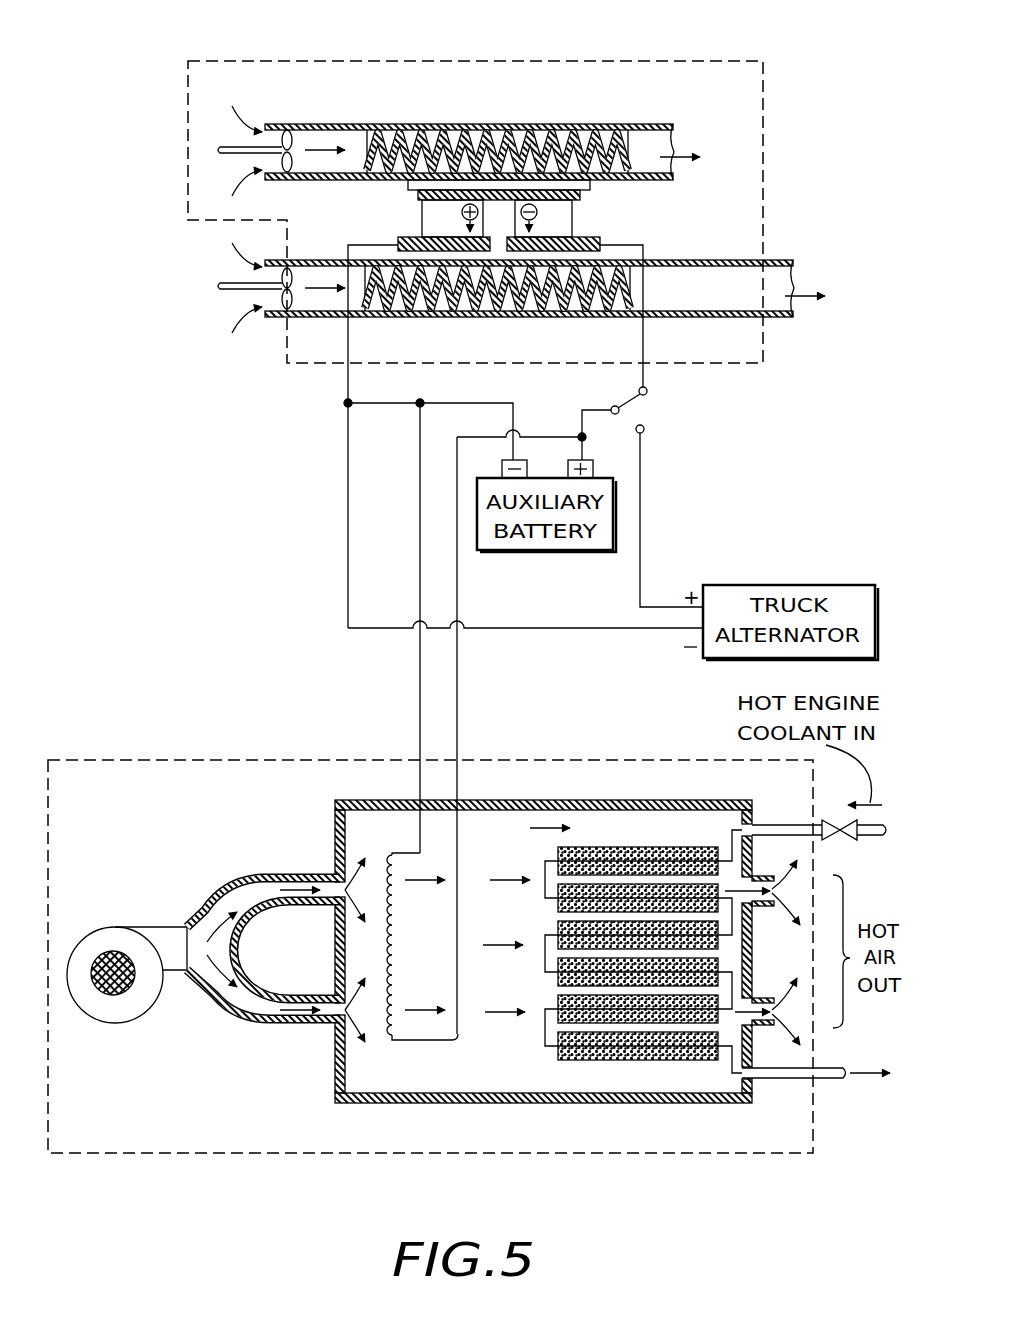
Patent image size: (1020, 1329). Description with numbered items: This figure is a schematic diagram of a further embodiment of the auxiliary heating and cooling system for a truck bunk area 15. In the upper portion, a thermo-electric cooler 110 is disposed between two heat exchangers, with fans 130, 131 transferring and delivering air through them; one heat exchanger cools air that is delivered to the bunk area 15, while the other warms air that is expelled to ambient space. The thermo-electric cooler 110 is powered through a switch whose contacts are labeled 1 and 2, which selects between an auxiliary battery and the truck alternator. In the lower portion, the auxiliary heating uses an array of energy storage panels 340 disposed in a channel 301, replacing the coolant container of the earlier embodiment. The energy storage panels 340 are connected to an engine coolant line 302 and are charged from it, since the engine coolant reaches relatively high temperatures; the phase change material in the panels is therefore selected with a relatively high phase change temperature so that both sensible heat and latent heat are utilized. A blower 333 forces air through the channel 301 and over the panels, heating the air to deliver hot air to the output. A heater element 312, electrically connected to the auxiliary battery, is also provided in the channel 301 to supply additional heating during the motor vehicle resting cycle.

The bunk area 15 is at (548, 58).
The fan 131 is at (294, 137).
The fan 130 is at (294, 276).
The thermo-electric cooler 110 is at (584, 219).
The switch position 1 terminal 1 is at (623, 408).
The switch position 2 terminal 2 is at (669, 514).
The channel 301 is at (592, 800).
The blower 333 is at (118, 1023).
The heater element 312 is at (386, 945).
The energy storage panels 340 is at (645, 846).
The engine coolant line 302 is at (875, 838).